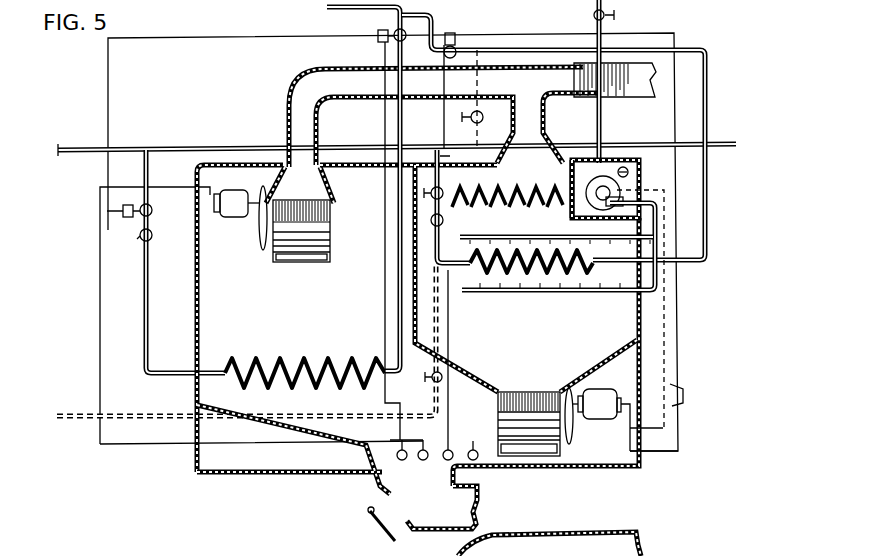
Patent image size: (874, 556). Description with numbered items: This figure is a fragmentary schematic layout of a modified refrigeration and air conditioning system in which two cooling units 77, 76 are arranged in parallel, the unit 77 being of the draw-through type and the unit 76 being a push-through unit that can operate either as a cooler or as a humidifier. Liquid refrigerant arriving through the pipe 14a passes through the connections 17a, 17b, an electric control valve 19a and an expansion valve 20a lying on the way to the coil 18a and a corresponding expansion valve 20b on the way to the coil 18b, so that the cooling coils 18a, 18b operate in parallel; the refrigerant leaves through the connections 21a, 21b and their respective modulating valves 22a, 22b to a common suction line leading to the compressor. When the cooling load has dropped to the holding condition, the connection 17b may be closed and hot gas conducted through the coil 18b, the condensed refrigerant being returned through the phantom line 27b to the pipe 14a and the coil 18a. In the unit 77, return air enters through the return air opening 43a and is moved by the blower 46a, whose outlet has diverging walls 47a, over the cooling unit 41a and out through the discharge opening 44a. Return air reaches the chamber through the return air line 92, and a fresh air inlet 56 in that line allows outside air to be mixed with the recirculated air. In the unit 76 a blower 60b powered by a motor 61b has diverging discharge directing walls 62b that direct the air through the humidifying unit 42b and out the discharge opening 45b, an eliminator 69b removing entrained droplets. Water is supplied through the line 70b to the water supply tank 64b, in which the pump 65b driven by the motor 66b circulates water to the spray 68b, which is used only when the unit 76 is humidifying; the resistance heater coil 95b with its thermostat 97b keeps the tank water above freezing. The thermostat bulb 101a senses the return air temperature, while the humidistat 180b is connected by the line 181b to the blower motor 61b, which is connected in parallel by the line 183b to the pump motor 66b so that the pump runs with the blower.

The liquid supply pipe 14a is at (77, 147).
The modulating valve 22a is at (394, 30).
The modulating valve 22b is at (463, 38).
The discharge opening 44a is at (287, 104).
The return line 27b is at (478, 82).
The discharge opening 45b is at (548, 125).
The water supply line 70b is at (608, 112).
The suction connection 21a is at (403, 124).
The refrigerant connection 17b is at (460, 105).
The thermostat 97b is at (637, 162).
The water supply tank 64b is at (630, 176).
The eliminator 69b is at (487, 192).
The resistance heater coil 95b is at (575, 186).
The electric control valve 19a is at (160, 206).
The expansion valve 20a is at (152, 238).
The diverging walls 47a is at (285, 198).
The cooling unit 41a is at (332, 215).
The blower 46a is at (332, 239).
The expansion valve 20b is at (444, 222).
The spray pipes 68b is at (487, 237).
The pump 65b is at (571, 218).
The pump motor 66b is at (595, 225).
The suction connection 21b is at (707, 211).
The cooling coil 18b is at (477, 262).
The draw-through cooling unit 77 is at (307, 306).
The push-through interchangeable unit 76 is at (528, 351).
The diverging discharge directing walls 62b is at (616, 355).
The refrigerant connection 17a is at (169, 371).
The cooling coil 18a is at (270, 353).
The blower motor 61b is at (604, 390).
The humidifying unit 42b is at (498, 407).
The humidistat 180b is at (488, 441).
The blower 60b is at (578, 447).
The control line 181b is at (632, 415).
The parallel connection line 183b is at (678, 452).
The thermostat bulb 101a is at (404, 460).
The return air opening 43a is at (380, 492).
The return air line 92 is at (480, 500).
The fresh air inlet 56 is at (376, 538).